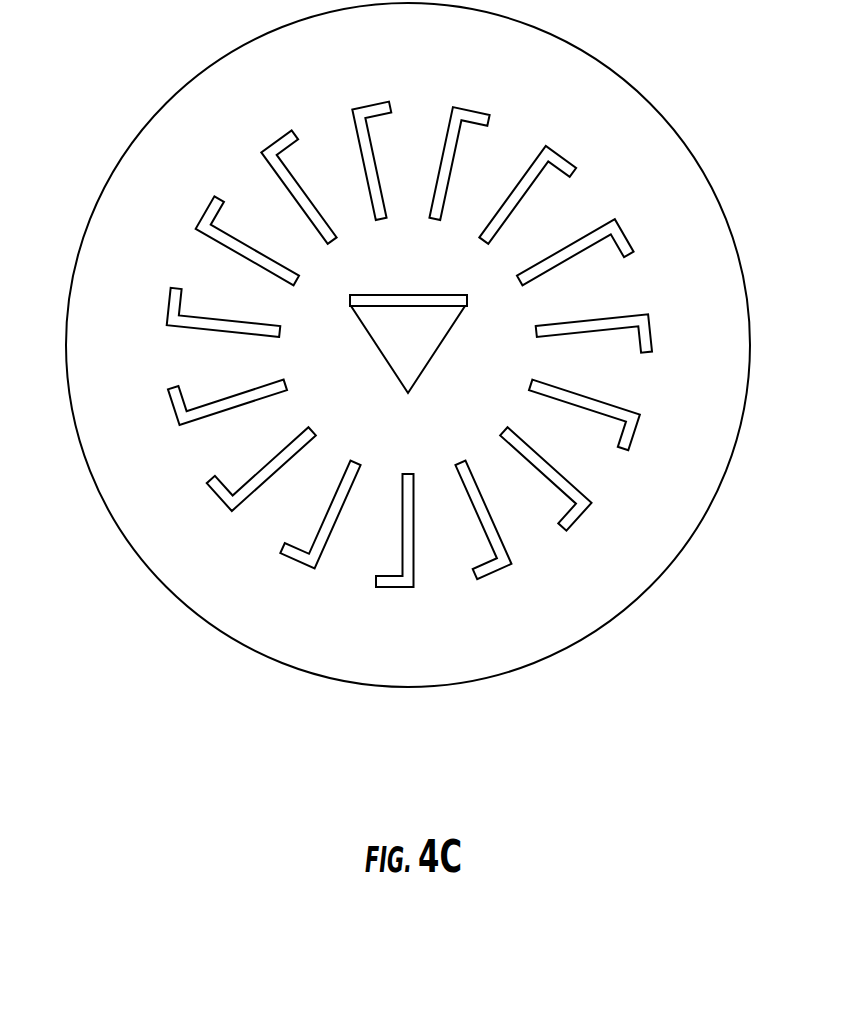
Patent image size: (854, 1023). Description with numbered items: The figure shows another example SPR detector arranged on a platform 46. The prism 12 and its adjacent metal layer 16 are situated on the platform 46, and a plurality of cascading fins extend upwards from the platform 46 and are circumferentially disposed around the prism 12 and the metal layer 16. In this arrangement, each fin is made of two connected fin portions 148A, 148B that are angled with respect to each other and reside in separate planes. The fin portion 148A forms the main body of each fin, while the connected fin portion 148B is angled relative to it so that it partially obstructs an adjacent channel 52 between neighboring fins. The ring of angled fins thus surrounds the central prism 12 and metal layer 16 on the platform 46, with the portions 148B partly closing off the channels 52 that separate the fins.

The platform 46 is at (95, 485).
The metal layer 16 is at (403, 295).
The prism 12 is at (438, 350).
The channel 52 is at (295, 408).
The fin portion 148A is at (283, 465).
The fin portion 148B is at (292, 552).